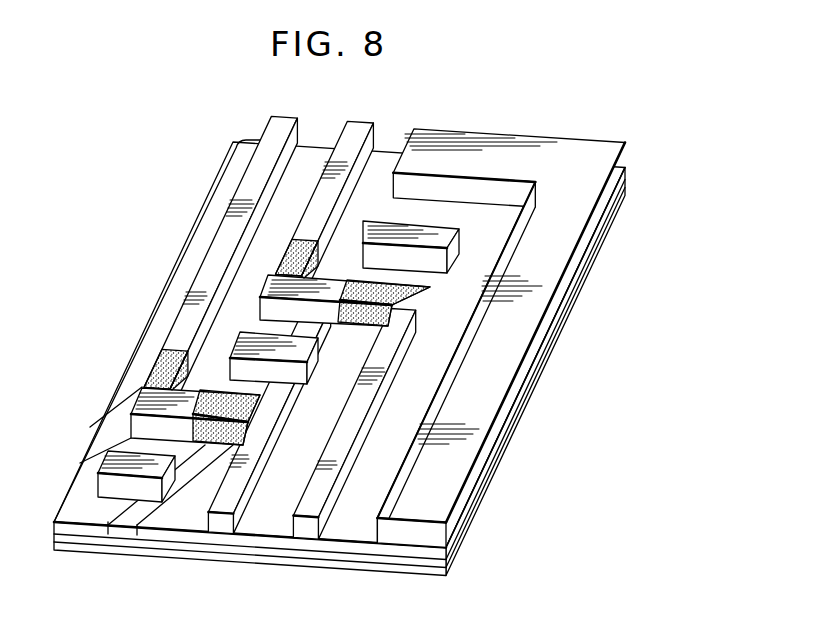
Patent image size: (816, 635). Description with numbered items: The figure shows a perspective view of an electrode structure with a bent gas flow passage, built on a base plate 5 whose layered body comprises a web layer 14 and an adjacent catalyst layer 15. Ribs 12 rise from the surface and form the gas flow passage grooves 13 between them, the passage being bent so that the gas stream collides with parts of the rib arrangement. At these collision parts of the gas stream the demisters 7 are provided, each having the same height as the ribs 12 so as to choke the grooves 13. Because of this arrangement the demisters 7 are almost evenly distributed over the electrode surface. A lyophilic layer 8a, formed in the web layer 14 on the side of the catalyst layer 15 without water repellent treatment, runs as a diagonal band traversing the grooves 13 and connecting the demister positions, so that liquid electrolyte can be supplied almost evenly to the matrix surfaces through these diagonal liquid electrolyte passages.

The separator 5 is at (421, 574).
The demister 7 is at (293, 250).
The lyophilic layer 8a is at (122, 397).
The rib 12 is at (317, 528).
The gas flow passage groove 13 is at (270, 518).
The web layer 14 is at (197, 543).
The catalyst layer 15 is at (83, 541).